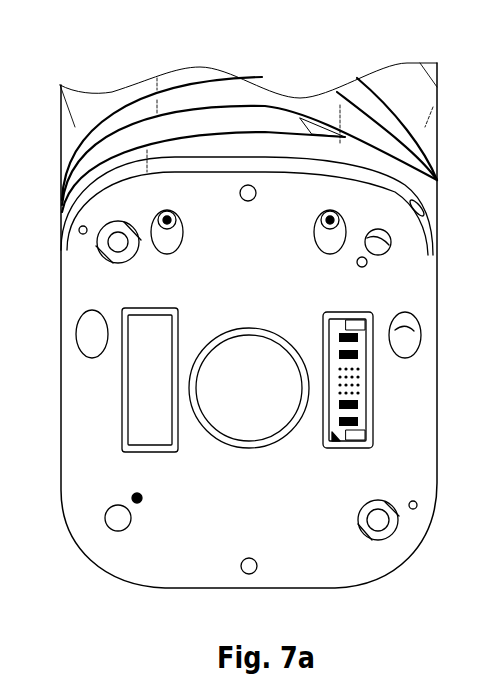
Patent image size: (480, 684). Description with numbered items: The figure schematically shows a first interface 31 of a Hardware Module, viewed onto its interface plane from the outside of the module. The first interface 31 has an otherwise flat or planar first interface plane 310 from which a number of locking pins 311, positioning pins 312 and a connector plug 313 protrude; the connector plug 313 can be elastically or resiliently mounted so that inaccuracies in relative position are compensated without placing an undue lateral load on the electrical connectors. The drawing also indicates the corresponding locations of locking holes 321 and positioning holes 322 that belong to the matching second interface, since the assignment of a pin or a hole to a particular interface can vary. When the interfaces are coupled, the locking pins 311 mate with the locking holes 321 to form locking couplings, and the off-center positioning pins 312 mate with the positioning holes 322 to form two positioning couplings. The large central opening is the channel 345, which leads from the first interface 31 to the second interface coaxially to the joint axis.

The first interface 31 is at (112, 66).
The first interface plane 310 is at (153, 565).
The locking pin 311 is at (383, 252).
The positioning pin 312 is at (266, 379).
The connector plug 313 is at (343, 447).
The locking hole 321 is at (100, 254).
The positioning hole 322 is at (248, 201).
The channel 345 is at (249, 405).